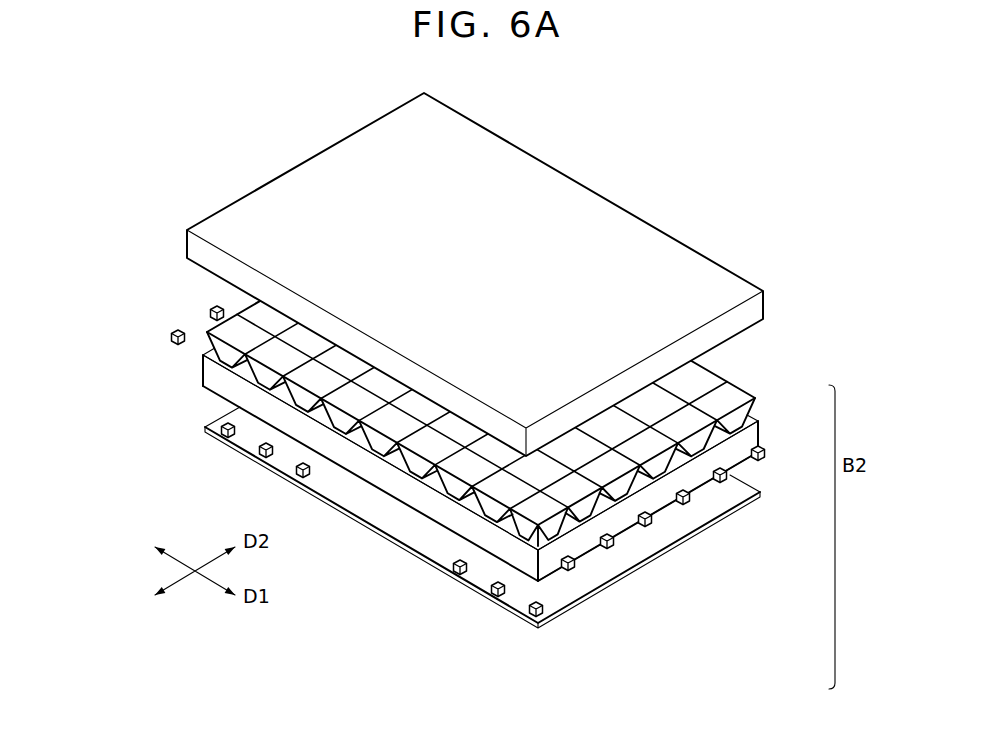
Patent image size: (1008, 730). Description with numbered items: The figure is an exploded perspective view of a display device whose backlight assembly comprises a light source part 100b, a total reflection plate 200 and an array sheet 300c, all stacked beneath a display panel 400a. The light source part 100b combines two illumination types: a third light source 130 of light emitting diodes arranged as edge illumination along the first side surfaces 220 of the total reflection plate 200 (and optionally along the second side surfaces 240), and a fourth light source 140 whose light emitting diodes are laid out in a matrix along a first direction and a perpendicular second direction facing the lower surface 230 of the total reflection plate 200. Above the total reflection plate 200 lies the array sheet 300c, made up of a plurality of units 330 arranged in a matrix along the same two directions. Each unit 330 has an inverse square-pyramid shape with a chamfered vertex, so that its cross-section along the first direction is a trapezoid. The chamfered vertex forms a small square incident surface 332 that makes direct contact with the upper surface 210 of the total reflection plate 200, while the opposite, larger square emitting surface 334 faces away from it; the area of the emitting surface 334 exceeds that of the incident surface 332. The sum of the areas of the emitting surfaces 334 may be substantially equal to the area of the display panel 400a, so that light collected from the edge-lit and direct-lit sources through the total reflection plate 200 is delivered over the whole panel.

The display panel 400a is at (766, 307).
The array sheet 300c is at (517, 410).
The unit 330 is at (495, 410).
The incident surface 332 is at (548, 578).
The emitting surface 334 is at (568, 492).
The total reflection plate 200 is at (480, 538).
The upper surface 210 is at (508, 526).
The first side surface 220 is at (648, 571).
The lower surface 230 is at (492, 548).
The second side surface 240 is at (452, 520).
The light source part 100b is at (411, 467).
The third light source 130 is at (112, 433).
The fourth light source 140 is at (222, 416).